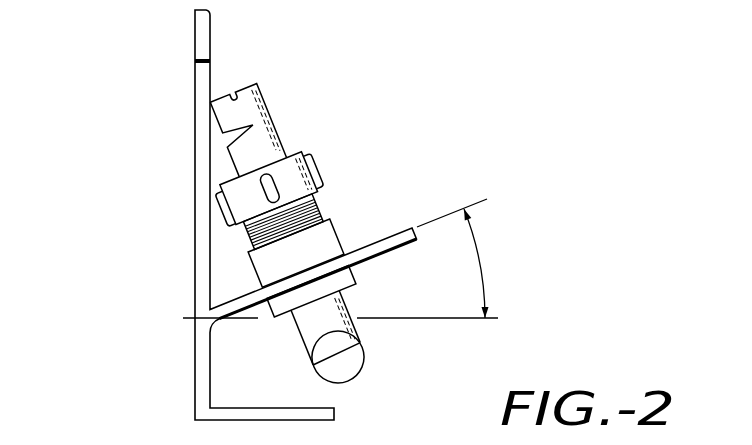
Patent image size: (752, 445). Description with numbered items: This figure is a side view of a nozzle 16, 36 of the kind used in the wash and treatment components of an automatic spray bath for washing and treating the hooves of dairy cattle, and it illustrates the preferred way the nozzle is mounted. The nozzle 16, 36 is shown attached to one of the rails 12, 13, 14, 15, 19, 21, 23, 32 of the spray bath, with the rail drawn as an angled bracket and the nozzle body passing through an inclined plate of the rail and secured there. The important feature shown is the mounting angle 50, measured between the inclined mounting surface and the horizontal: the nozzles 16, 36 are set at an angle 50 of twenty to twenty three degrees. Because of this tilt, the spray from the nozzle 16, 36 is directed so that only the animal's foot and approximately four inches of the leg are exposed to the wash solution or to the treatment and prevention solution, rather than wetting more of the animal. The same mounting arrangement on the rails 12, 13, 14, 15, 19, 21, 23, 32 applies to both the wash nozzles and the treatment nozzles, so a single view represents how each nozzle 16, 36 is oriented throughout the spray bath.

The rail 12 is at (221, 215).
The rail 13 is at (221, 215).
The rail 14 is at (221, 215).
The rail 15 is at (221, 215).
The rail 19 is at (221, 215).
The rail 21 is at (221, 215).
The rail 23 is at (221, 215).
The rail 32 is at (187, 28).
The nozzle 16 is at (316, 232).
The nozzle 36 is at (348, 103).
The mounting angle 50 is at (480, 258).